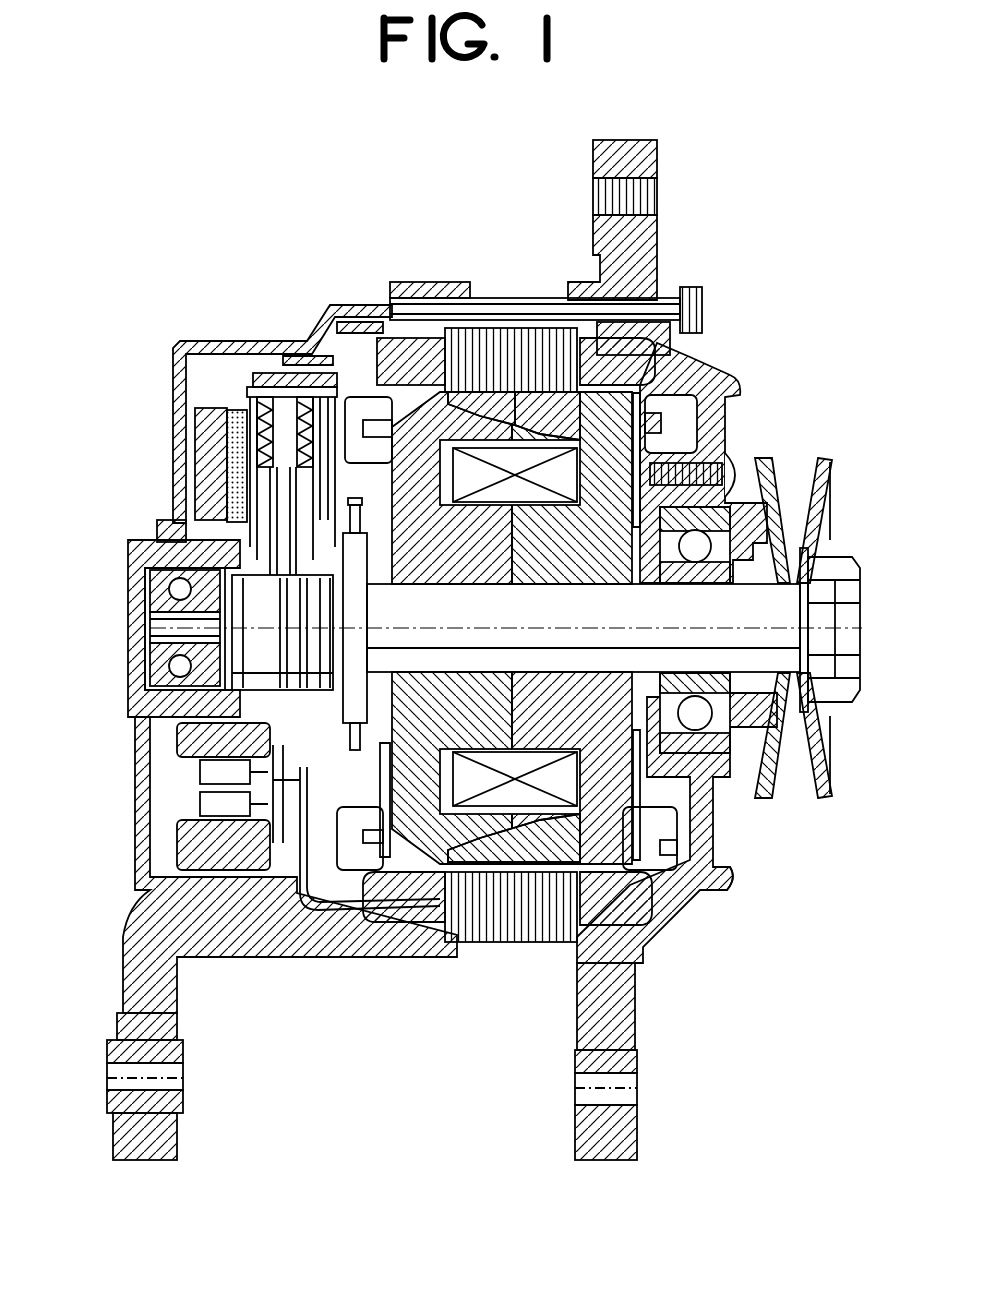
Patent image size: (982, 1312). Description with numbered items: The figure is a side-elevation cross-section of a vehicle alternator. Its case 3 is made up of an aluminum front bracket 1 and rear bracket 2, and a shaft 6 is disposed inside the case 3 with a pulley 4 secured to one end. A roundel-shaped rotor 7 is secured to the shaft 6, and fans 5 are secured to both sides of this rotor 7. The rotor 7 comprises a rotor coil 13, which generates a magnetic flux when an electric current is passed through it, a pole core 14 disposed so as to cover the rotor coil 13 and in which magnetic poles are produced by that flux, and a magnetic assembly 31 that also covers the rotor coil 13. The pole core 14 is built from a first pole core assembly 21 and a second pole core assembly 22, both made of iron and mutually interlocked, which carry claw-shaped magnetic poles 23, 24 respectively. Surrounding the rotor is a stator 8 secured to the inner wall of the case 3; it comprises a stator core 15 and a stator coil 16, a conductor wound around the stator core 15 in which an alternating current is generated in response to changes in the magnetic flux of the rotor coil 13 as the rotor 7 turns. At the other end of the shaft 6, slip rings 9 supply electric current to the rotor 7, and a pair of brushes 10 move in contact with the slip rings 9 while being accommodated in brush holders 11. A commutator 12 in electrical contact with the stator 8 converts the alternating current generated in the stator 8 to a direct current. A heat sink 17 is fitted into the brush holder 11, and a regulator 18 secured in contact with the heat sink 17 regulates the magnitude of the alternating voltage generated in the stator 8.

The front bracket 1 is at (687, 913).
The rear bracket 2 is at (255, 958).
The case 3 is at (335, 303).
The pulley 4 is at (826, 460).
The fans 5 is at (363, 857).
The shaft 6 is at (700, 745).
The rotor 7 is at (607, 420).
The stator 8 is at (537, 976).
The slip rings 9 is at (258, 663).
The brushes 10 is at (262, 502).
The brush holders 11 is at (300, 545).
The commutator 12 is at (180, 762).
The rotor coil 13 is at (443, 947).
The pole core 14 is at (525, 905).
The stator core 15 is at (513, 357).
The stator coil 16 is at (643, 350).
The heat sink 17 is at (195, 440).
The regulator 18 is at (236, 412).
The first pole core assembly 21 is at (650, 860).
The second pole core assembly 22 is at (353, 850).
The claw-shaped magnetic poles 23 is at (560, 420).
The claw-shaped magnetic poles 24 is at (470, 410).
The magnetic assembly 31 is at (393, 850).